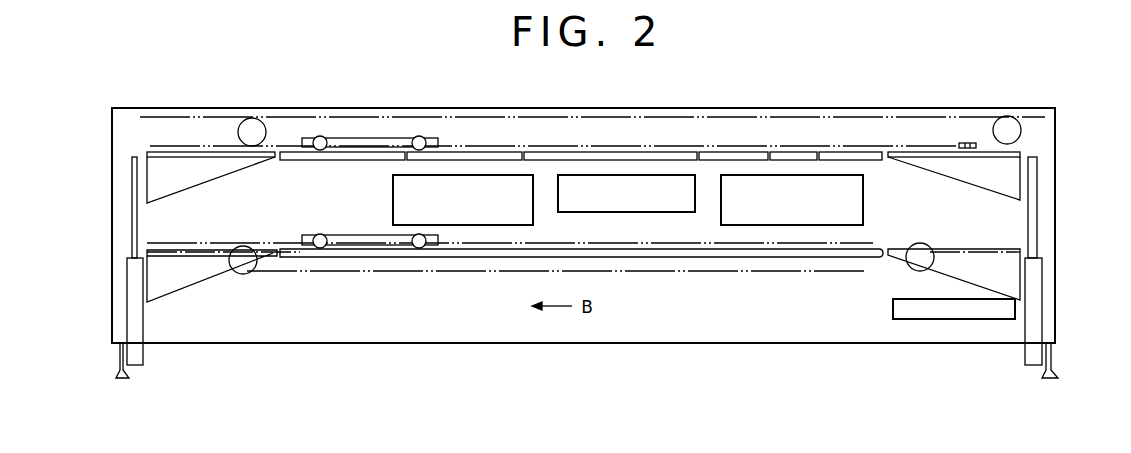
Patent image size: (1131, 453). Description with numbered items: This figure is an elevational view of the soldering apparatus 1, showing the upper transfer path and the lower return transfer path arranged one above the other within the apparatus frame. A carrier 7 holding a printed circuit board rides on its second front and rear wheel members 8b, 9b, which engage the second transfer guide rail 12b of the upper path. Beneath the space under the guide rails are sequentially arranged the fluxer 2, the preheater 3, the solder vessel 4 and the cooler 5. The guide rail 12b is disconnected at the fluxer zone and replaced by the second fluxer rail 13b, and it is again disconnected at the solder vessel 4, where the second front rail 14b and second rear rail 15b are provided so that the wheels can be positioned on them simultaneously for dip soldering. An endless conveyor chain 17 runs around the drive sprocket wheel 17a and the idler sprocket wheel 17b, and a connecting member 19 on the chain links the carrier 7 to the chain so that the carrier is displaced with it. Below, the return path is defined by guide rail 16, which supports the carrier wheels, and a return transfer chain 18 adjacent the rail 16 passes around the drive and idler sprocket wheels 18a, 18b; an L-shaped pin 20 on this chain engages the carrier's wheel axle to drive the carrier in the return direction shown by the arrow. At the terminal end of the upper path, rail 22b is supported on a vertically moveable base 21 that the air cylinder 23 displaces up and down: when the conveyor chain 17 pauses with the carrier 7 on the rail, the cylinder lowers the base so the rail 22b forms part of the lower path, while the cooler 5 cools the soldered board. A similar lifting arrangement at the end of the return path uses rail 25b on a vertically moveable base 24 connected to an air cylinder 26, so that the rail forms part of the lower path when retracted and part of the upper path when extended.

The soldering apparatus 1 is at (569, 108).
The fluxer 2 is at (491, 214).
The preheater 3 is at (659, 204).
The solder vessel 4 is at (750, 214).
The cooler 5 is at (945, 312).
The carrier 7 is at (362, 139).
The second front wheel member 8b is at (419, 136).
The second rear wheel member 9b is at (319, 136).
The second transfer guide rail 12b is at (352, 160).
The second fluxer rail 13b is at (476, 153).
The second front rail 14b is at (849, 153).
The second rear rail 15b is at (725, 153).
The guide rail 16 is at (783, 257).
The conveyor chain 17 is at (755, 117).
The drive sprocket wheel 17a is at (1007, 116).
The idler sprocket wheel 17b is at (252, 118).
The return transfer chain 18 is at (824, 271).
The drive sprocket wheel 18a is at (935, 262).
The idler sprocket wheel 18b is at (236, 262).
The connecting member 19 is at (968, 143).
The L-shaped pin 20 is at (868, 275).
The vertically moveable base 21 is at (950, 166).
The rail 22b is at (912, 157).
The air cylinder 23 is at (1035, 308).
The vertically moveable base 24 is at (150, 182).
The rail 25b is at (180, 152).
The air cylinder 26 is at (132, 308).